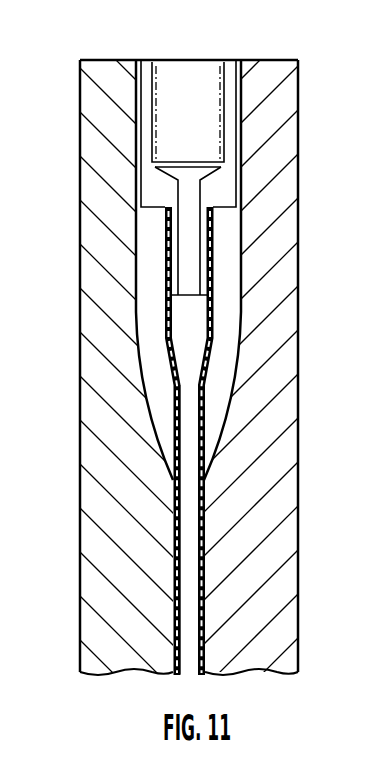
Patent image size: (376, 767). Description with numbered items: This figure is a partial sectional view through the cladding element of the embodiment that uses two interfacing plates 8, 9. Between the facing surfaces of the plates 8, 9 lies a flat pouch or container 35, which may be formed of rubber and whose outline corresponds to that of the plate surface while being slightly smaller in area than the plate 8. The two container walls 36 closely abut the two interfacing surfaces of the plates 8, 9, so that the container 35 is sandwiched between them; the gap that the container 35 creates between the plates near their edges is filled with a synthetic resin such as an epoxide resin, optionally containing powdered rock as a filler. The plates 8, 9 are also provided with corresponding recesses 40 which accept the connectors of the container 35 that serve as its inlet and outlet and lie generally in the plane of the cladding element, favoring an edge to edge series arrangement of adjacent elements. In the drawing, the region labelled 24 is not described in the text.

The interfacing plate 8 is at (288, 633).
The interfacing plate 9 is at (90, 638).
The annular gap 24 is at (228, 267).
The flat pouch or container 35 is at (188, 472).
The container walls 36 is at (202, 612).
The recesses 40 is at (152, 62).